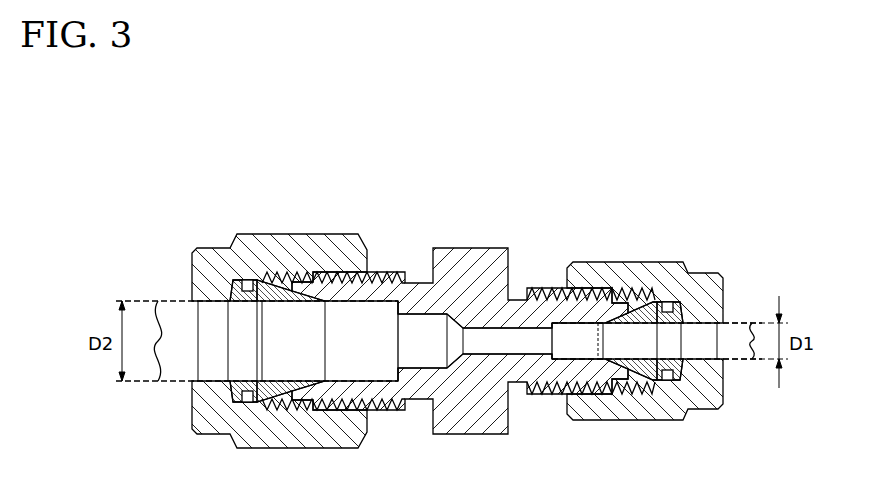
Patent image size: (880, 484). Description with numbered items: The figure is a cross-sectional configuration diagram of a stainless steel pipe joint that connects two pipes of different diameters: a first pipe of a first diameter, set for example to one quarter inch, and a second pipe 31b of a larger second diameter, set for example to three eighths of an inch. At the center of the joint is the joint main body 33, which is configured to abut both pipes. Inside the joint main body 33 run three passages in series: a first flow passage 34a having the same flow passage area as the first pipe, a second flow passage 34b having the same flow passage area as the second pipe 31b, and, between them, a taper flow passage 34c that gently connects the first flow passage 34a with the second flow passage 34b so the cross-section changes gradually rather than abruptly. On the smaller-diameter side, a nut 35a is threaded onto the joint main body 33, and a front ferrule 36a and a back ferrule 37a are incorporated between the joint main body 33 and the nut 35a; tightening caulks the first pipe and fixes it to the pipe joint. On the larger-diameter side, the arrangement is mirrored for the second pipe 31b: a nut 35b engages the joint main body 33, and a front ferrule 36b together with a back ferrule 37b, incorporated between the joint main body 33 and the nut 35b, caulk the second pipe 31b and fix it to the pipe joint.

The second pipe 31b is at (170, 302).
The joint main body 33 is at (475, 249).
The first flow passage 34a is at (508, 337).
The second flow passage 34b is at (415, 316).
The taper flow passage 34c is at (462, 333).
The nut 35a is at (655, 262).
The nut 35b is at (272, 235).
The front ferrule 36a is at (636, 308).
The front ferrule 36b is at (288, 283).
The back ferrule 37a is at (667, 305).
The back ferrule 37b is at (248, 281).